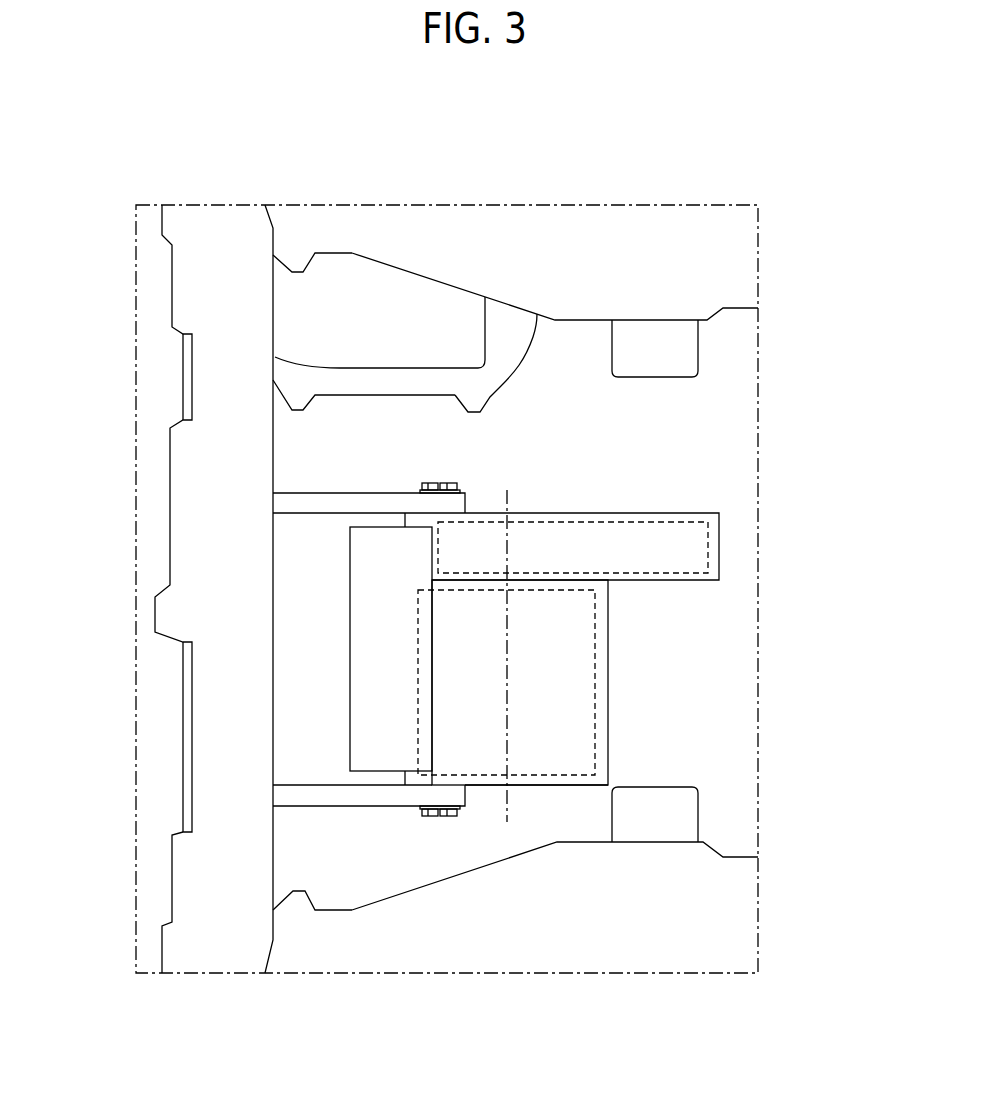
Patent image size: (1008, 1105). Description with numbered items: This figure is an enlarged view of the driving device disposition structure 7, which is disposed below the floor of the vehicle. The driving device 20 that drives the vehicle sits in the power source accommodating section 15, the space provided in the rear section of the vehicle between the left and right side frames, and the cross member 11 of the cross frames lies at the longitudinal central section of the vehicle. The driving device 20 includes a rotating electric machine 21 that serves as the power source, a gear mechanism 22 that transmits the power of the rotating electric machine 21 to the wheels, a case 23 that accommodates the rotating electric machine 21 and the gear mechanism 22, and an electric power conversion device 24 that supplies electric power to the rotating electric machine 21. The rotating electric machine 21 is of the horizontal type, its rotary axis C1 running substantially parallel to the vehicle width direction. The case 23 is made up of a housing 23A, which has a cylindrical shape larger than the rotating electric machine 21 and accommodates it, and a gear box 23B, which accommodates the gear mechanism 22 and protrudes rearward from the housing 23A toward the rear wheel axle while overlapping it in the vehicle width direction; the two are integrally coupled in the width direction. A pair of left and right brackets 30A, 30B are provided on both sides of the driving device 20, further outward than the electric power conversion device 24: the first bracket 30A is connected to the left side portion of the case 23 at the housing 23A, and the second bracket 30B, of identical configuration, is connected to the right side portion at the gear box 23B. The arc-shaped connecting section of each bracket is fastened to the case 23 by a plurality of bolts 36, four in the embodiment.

The driving device disposition structure 7 is at (813, 146).
The cross member 11 is at (208, 540).
The power source accommodating section 15 is at (644, 460).
The driving device 20 is at (485, 810).
The rotating electric machine 21 is at (595, 693).
The gear mechanism 22 is at (677, 580).
The case 23 is at (608, 748).
The housing 23A is at (578, 787).
The gear box 23B is at (721, 547).
The electric power conversion device 24 is at (368, 715).
The first bracket 30A is at (318, 797).
The second bracket 30B is at (325, 500).
The bolt 36 is at (428, 483).
The rotary axis C1 is at (508, 800).